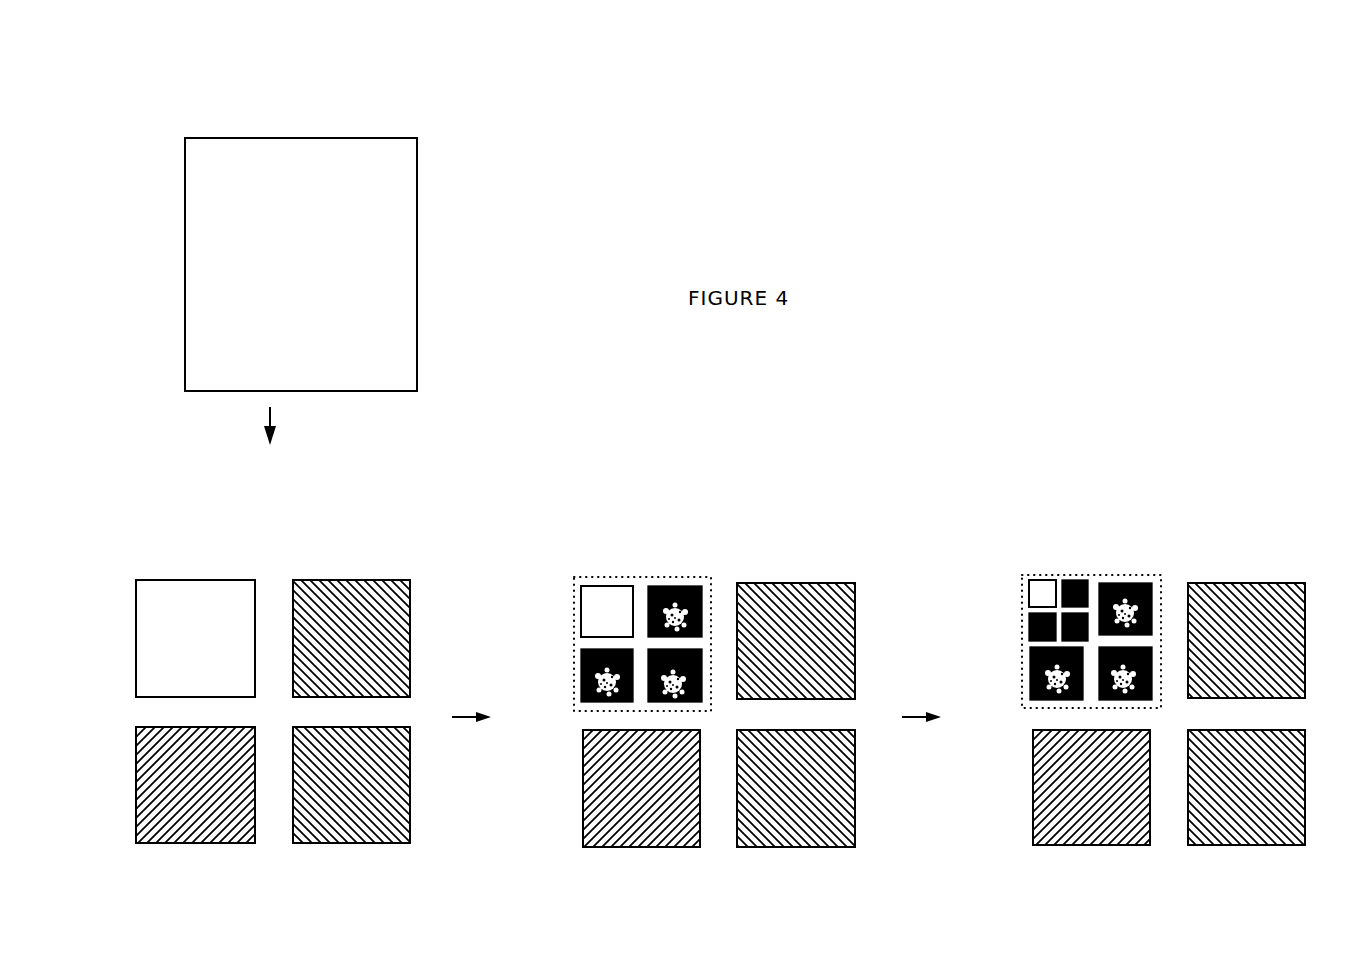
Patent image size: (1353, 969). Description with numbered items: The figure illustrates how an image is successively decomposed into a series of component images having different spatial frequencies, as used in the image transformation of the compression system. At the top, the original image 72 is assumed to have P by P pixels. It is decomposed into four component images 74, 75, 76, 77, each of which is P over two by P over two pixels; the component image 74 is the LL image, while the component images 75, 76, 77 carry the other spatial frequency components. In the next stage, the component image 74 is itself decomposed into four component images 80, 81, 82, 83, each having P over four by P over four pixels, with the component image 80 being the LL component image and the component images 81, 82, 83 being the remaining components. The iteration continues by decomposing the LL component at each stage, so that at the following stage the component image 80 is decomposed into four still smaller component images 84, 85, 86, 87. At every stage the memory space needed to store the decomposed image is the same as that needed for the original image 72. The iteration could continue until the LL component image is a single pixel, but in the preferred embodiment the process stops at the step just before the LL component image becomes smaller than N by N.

The original image 72 is at (263, 148).
The component image 74 is at (187, 597).
The component image 75 is at (360, 600).
The component image 76 is at (373, 827).
The component image 77 is at (187, 830).
The component image 80 is at (592, 598).
The component image 81 is at (671, 587).
The component image 82 is at (680, 698).
The component image 83 is at (582, 673).
The component image 84 is at (1046, 590).
The component image 85 is at (1078, 580).
The component image 86 is at (1085, 640).
The component image 87 is at (1030, 618).